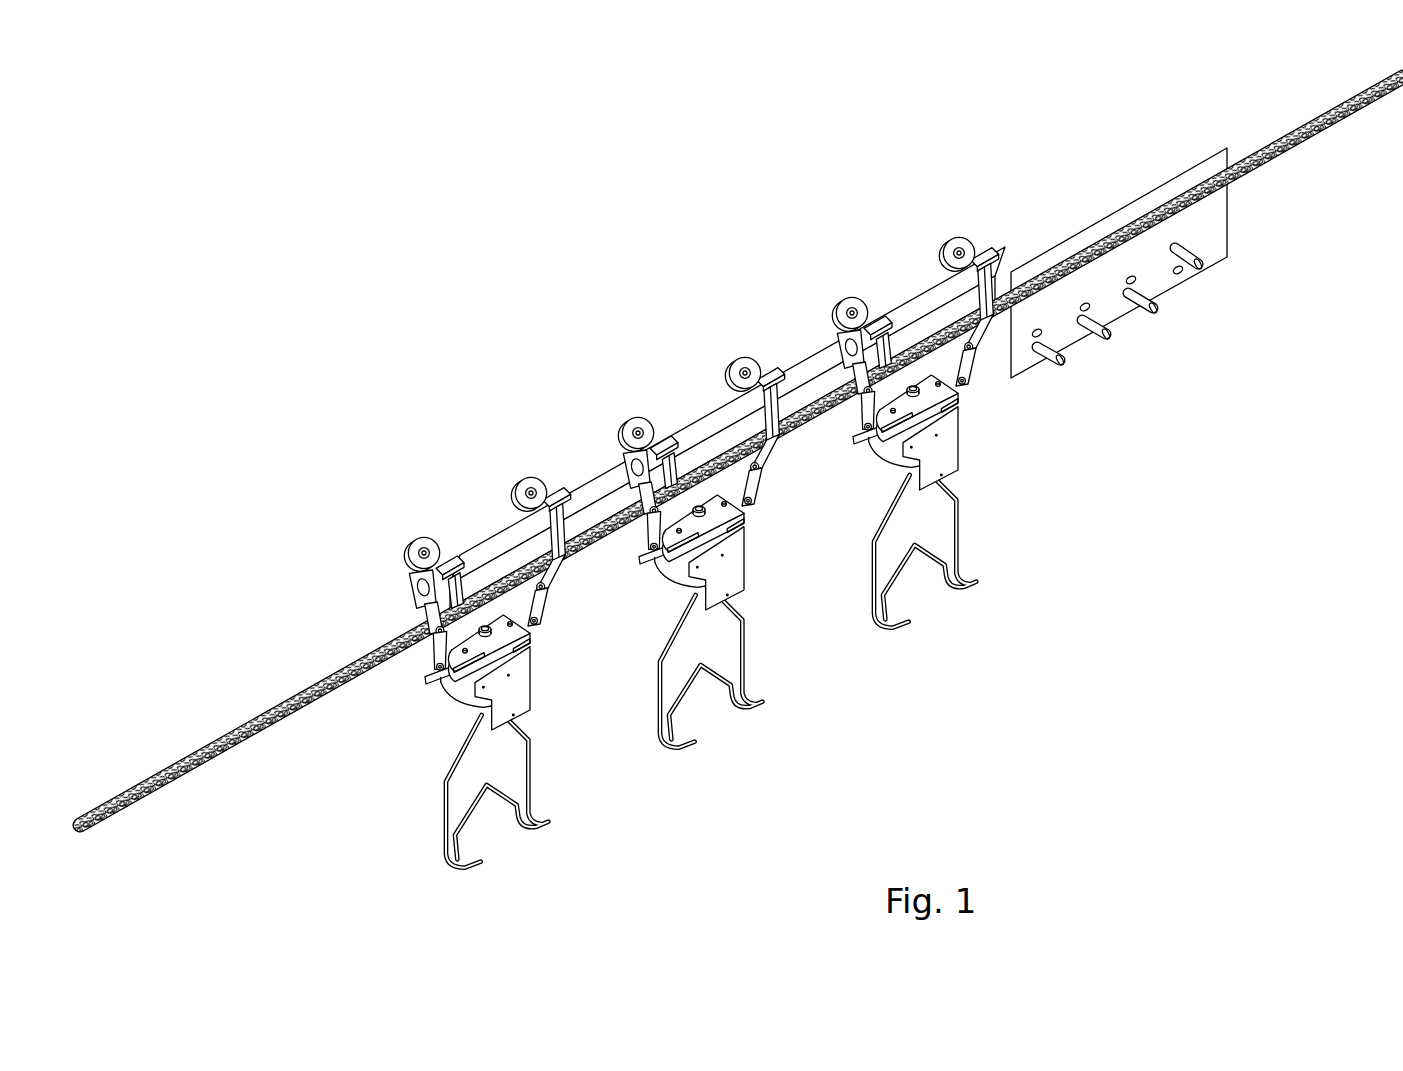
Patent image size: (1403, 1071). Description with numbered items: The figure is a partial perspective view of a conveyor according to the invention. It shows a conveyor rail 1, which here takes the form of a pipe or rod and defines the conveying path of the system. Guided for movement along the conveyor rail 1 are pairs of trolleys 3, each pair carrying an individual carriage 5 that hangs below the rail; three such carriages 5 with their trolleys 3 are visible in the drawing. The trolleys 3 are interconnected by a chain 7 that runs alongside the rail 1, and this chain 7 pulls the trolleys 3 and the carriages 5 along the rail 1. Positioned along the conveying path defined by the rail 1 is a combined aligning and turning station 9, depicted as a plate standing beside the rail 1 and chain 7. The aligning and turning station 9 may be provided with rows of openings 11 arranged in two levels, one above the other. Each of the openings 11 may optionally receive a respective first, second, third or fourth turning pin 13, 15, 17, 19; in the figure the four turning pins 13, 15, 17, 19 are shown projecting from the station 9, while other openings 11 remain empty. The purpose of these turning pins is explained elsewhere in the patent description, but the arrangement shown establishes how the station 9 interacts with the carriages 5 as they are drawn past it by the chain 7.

The conveyor rail 1 is at (492, 540).
The trolleys 3 is at (400, 535).
The carriages 5 is at (502, 660).
The chain 7 is at (1283, 157).
The aligning and turning station 9 is at (1216, 236).
The openings 11 is at (1039, 329).
The first turning pin 13 is at (1062, 363).
The second turning pin 15 is at (1110, 336).
The third turning pin 17 is at (1156, 311).
The fourth turning pin 19 is at (1188, 250).